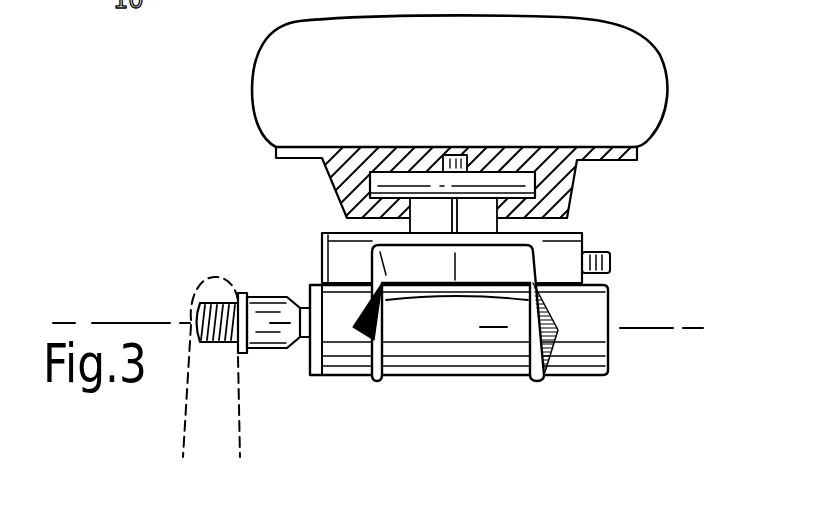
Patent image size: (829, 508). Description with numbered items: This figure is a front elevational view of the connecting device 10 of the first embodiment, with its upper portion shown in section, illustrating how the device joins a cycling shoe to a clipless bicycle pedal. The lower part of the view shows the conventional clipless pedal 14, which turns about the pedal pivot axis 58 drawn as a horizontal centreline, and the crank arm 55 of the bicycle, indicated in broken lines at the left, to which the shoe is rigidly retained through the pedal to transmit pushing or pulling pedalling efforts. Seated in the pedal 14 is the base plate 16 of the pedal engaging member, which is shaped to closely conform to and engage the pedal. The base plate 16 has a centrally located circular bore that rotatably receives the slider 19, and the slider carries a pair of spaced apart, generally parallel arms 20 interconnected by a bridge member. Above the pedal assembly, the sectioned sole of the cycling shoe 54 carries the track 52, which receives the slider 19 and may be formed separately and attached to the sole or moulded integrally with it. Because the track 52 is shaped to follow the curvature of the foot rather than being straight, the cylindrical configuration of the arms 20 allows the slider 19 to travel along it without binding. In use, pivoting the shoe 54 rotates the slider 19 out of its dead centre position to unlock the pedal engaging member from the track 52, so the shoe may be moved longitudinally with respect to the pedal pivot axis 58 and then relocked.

The connecting device 10 is at (248, 227).
The pedal 14 is at (580, 307).
The base plate 16 is at (685, 212).
The slider 19 is at (556, 210).
The arms 20 is at (527, 180).
The track 52 is at (563, 147).
The cycling shoe 54 is at (632, 43).
The crank arm 55 is at (238, 412).
The pedal pivot axis 58 is at (92, 323).